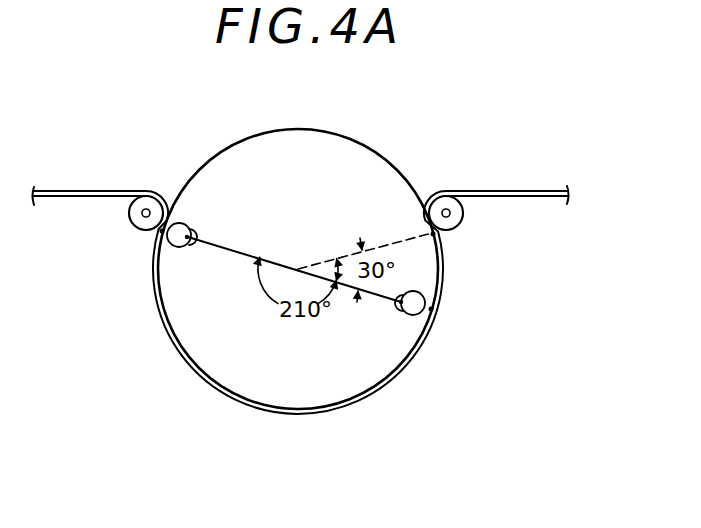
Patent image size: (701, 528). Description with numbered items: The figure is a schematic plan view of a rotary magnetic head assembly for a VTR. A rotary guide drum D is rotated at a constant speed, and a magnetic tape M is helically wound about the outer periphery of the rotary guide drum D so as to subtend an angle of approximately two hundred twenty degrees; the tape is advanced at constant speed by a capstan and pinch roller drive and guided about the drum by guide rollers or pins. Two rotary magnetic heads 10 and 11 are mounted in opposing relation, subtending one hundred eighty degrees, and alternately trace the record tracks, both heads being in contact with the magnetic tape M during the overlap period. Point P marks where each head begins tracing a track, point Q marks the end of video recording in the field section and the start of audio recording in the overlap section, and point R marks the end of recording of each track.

The rotary guide drum D is at (352, 133).
The magnetic tape M is at (518, 189).
The point P is at (155, 238).
The point R is at (441, 237).
The point Q is at (437, 314).
The rotary magnetic head 10 is at (182, 248).
The rotary magnetic head 11 is at (406, 317).